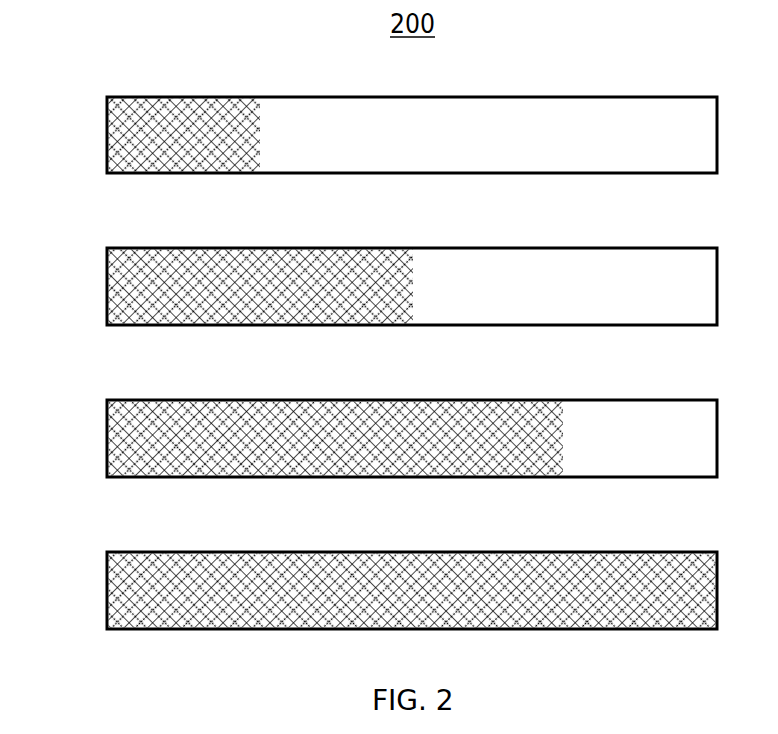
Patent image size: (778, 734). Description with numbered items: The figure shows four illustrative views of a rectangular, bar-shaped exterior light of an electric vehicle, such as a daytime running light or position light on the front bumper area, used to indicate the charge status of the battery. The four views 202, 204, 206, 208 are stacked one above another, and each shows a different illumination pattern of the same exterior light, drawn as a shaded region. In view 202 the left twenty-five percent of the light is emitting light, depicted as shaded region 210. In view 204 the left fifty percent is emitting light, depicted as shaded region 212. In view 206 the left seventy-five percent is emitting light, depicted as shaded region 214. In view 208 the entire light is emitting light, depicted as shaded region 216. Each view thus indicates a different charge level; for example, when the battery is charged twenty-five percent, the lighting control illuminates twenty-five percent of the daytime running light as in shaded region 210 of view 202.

The view 202 is at (684, 97).
The view 204 is at (684, 248).
The view 206 is at (684, 400).
The view 208 is at (684, 552).
The shaded region 210 is at (127, 135).
The shaded region 212 is at (127, 287).
The shaded region 214 is at (127, 440).
The shaded region 216 is at (127, 590).